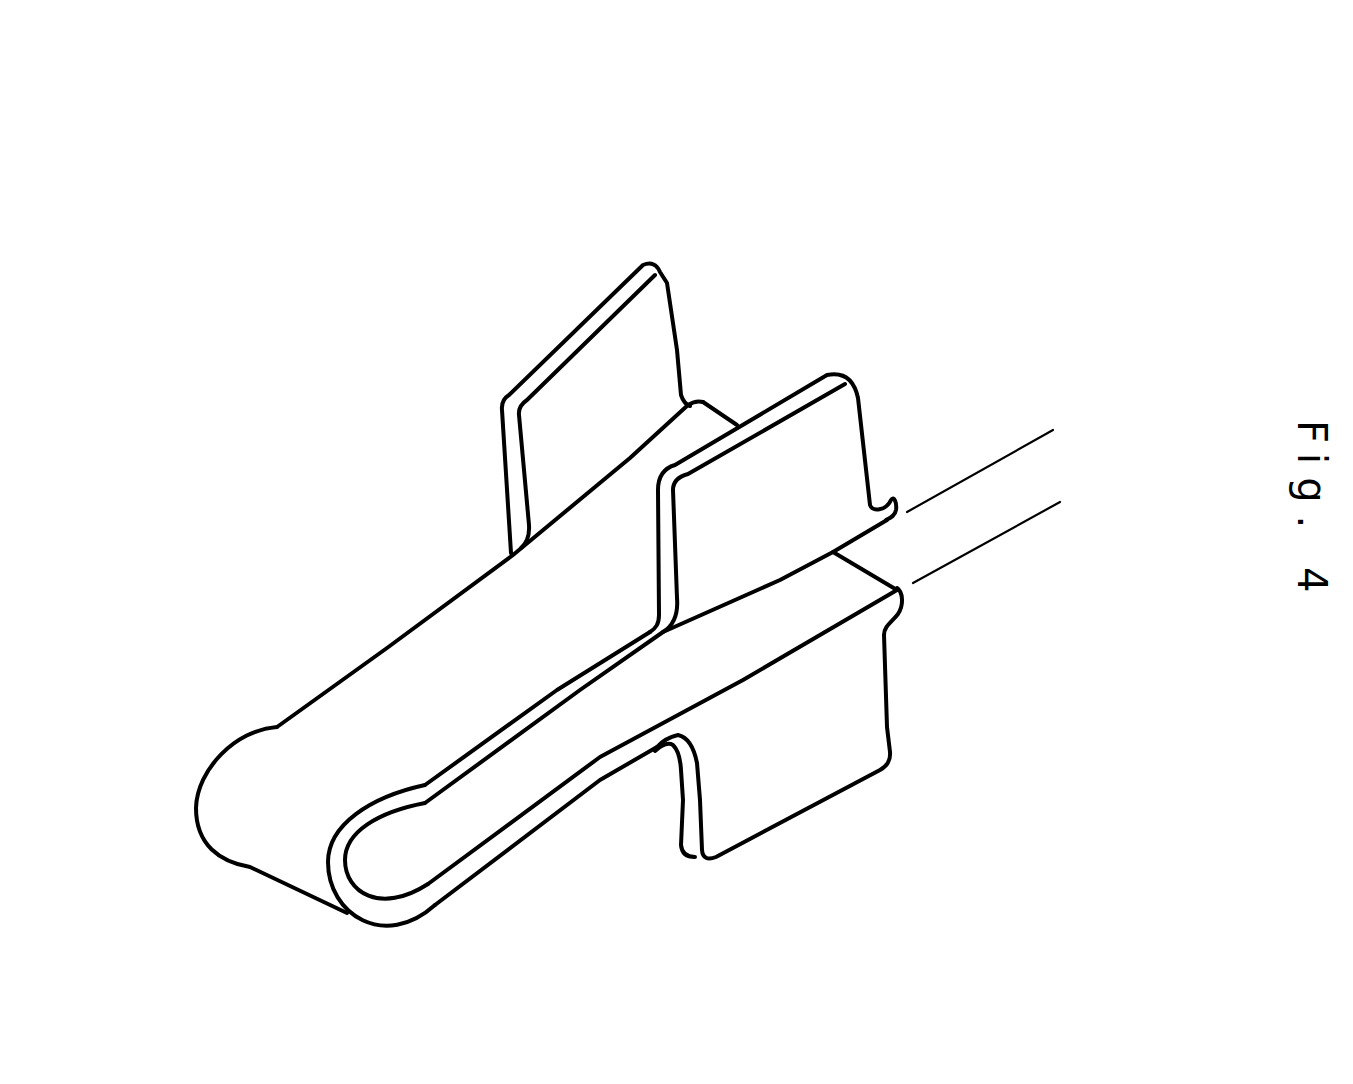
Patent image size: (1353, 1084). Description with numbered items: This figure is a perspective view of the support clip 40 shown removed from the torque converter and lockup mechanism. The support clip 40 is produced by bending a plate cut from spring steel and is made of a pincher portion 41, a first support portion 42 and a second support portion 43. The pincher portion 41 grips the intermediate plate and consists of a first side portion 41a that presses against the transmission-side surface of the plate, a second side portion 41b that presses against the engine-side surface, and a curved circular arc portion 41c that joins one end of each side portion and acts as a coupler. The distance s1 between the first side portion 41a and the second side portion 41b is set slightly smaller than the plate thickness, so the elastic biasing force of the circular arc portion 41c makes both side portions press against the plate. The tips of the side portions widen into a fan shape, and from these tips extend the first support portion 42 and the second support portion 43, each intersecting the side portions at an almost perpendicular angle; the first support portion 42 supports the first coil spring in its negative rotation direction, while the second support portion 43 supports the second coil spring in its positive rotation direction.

The support clip 40 is at (766, 223).
The pincher portion 41 is at (400, 633).
The first side portion 41a is at (701, 421).
The second side portion 41b is at (667, 687).
The circular arc portion 41c is at (268, 857).
The first support portion 42 is at (500, 455).
The second support portion 43 is at (832, 438).
The distance between first and second side portions s1 is at (1038, 438).